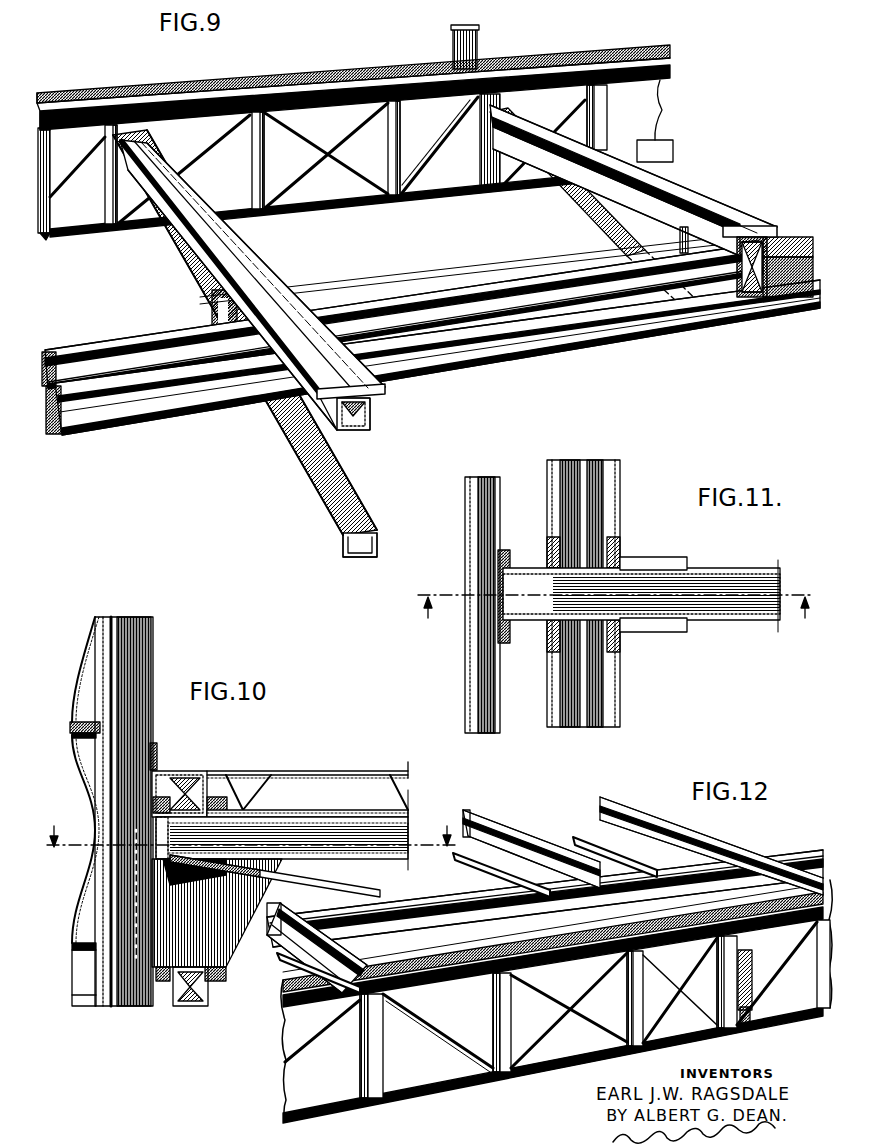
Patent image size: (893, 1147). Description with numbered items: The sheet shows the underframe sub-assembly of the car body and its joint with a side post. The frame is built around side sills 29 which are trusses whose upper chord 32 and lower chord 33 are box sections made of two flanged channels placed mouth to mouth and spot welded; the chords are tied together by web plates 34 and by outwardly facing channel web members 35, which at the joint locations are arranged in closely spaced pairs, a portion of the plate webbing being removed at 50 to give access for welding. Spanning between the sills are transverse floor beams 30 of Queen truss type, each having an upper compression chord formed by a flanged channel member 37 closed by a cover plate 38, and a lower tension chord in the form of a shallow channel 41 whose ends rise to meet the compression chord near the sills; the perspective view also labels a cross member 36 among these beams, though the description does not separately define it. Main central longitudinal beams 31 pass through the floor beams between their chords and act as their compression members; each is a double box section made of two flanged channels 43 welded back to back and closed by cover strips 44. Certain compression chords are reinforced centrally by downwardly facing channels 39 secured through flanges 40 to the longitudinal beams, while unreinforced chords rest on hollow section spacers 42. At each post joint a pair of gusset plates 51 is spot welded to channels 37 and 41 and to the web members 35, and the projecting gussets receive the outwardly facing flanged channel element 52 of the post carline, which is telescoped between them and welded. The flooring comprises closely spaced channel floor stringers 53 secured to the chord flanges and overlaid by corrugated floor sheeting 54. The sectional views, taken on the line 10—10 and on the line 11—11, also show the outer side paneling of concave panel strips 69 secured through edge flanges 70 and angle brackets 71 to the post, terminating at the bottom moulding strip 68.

In FIG. 11, the section line 10— 10 is at (617, 619).
In FIG. 10, the section line 11— 11 is at (253, 824).
In FIG. 9, the side sill 29 is at (347, 192).
In FIG. 12, the side sill 29 is at (443, 1092).
In FIG. 9, the transverse floor beam 30 is at (310, 397).
In FIG. 9, the main central longitudinal beam 31 is at (488, 345).
In FIG. 12, the main central longitudinal beam 31 is at (485, 919).
In FIG. 9, the upper chord 32 is at (38, 124).
In FIG. 10, the upper chord 32 is at (186, 771).
In FIG. 9, the lower chord 33 is at (42, 237).
In FIG. 11, the lower chord 33 is at (628, 710).
In FIG. 10, the lower chord 33 is at (191, 1007).
In FIG. 9, the web plate 34 is at (242, 205).
In FIG. 11, the web plate 34 is at (547, 480).
In FIG. 12, the web plate 34 is at (485, 1075).
In FIG. 9, the channel web member 35 is at (120, 222).
In FIG. 11, the channel web member 35 is at (549, 536).
In FIG. 10, the channel web member 35 is at (225, 982).
In FIG. 9, the cross bearer channel 36 is at (280, 266).
In FIG. 9, the flanged channel member 37 is at (372, 410).
In FIG. 11, the flanged channel member 37 is at (762, 605).
In FIG. 10, the flanged channel member 37 is at (408, 852).
In FIG. 12, the flanged channel member 37 is at (695, 841).
In FIG. 9, the cover plate 38 is at (297, 296).
In FIG. 10, the cover plate 38 is at (338, 813).
In FIG. 9, the downwardly facing flanged channel 39 is at (687, 233).
In FIG. 12, the downwardly facing flanged channel 39 is at (475, 810).
In FIG. 9, the flange 40 is at (672, 247).
In FIG. 9, the shallow channel 41 is at (320, 514).
In FIG. 10, the shallow channel 41 is at (380, 886).
In FIG. 12, the shallow channel 41 is at (290, 973).
In FIG. 9, the hollow section spacer 42 is at (210, 297).
In FIG. 9, the flanged channel 43 is at (43, 360).
In FIG. 9, the cover strip 44 is at (70, 350).
In FIG. 11, the removed portion of plate webbing 50 is at (552, 537).
In FIG. 12, the removed portion of plate webbing 50 is at (716, 1022).
In FIG. 11, the gusset plate 51 is at (643, 566).
In FIG. 10, the gusset plate 51 is at (236, 945).
In FIG. 12, the gusset plate 51 is at (741, 1023).
In FIG. 9, the flanged channel element 52 is at (478, 42).
In FIG. 11, the flanged channel element 52 is at (530, 612).
In FIG. 10, the flanged channel element 52 is at (142, 653).
In FIG. 10, the floor stringer 53 is at (261, 803).
In FIG. 10, the floor sheeting 54 is at (362, 771).
In FIG. 10, the bottom moulding strip 68 is at (75, 1008).
In FIG. 10, the concave panel strip 69 is at (86, 688).
In FIG. 10, the edge flange 70 is at (86, 720).
In FIG. 10, the angle bracket 71 is at (93, 737).